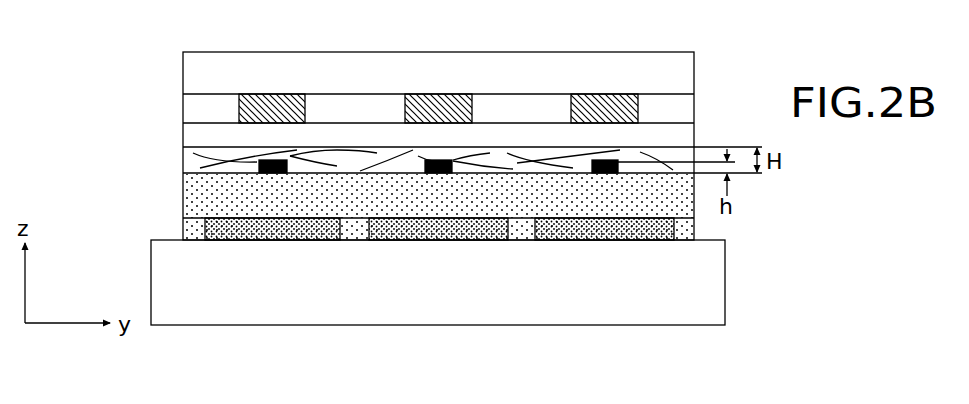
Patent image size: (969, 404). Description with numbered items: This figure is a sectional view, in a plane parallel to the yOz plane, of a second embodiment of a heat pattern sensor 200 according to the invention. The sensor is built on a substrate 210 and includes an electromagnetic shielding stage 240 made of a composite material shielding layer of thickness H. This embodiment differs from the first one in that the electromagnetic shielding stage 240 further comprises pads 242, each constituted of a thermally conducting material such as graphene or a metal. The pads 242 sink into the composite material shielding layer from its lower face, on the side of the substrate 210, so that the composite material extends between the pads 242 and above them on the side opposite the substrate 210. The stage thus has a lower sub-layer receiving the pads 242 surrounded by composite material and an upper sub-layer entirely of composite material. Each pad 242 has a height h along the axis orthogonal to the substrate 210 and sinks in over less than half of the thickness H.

The heat pattern sensor 200 is at (734, 58).
The substrate 210 is at (713, 272).
The electromagnetic shielding stage 240 is at (180, 147).
The pad 242 is at (432, 160).